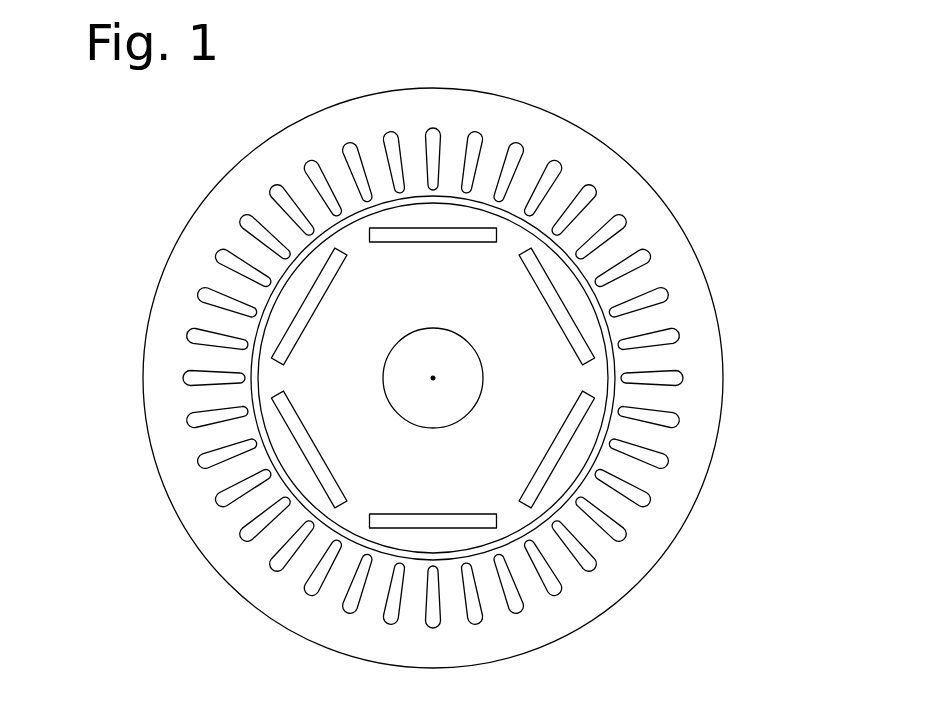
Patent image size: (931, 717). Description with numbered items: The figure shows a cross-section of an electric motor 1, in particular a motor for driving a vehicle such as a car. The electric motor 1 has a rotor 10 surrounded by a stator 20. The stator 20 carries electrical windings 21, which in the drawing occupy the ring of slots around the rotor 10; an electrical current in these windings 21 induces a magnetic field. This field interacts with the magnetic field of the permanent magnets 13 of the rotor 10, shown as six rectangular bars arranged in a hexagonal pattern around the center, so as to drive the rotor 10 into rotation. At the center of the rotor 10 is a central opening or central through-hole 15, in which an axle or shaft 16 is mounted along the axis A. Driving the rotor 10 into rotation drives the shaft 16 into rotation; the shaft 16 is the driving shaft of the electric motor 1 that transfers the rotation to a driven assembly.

The electric motor 1 is at (652, 113).
The rotor 10 is at (510, 453).
The permanent magnets 13 is at (300, 323).
The central through-hole 15 is at (403, 333).
The shaft 16 is at (437, 352).
The stator 20 is at (663, 231).
The electrical windings 21 is at (668, 417).
The axis A is at (433, 378).